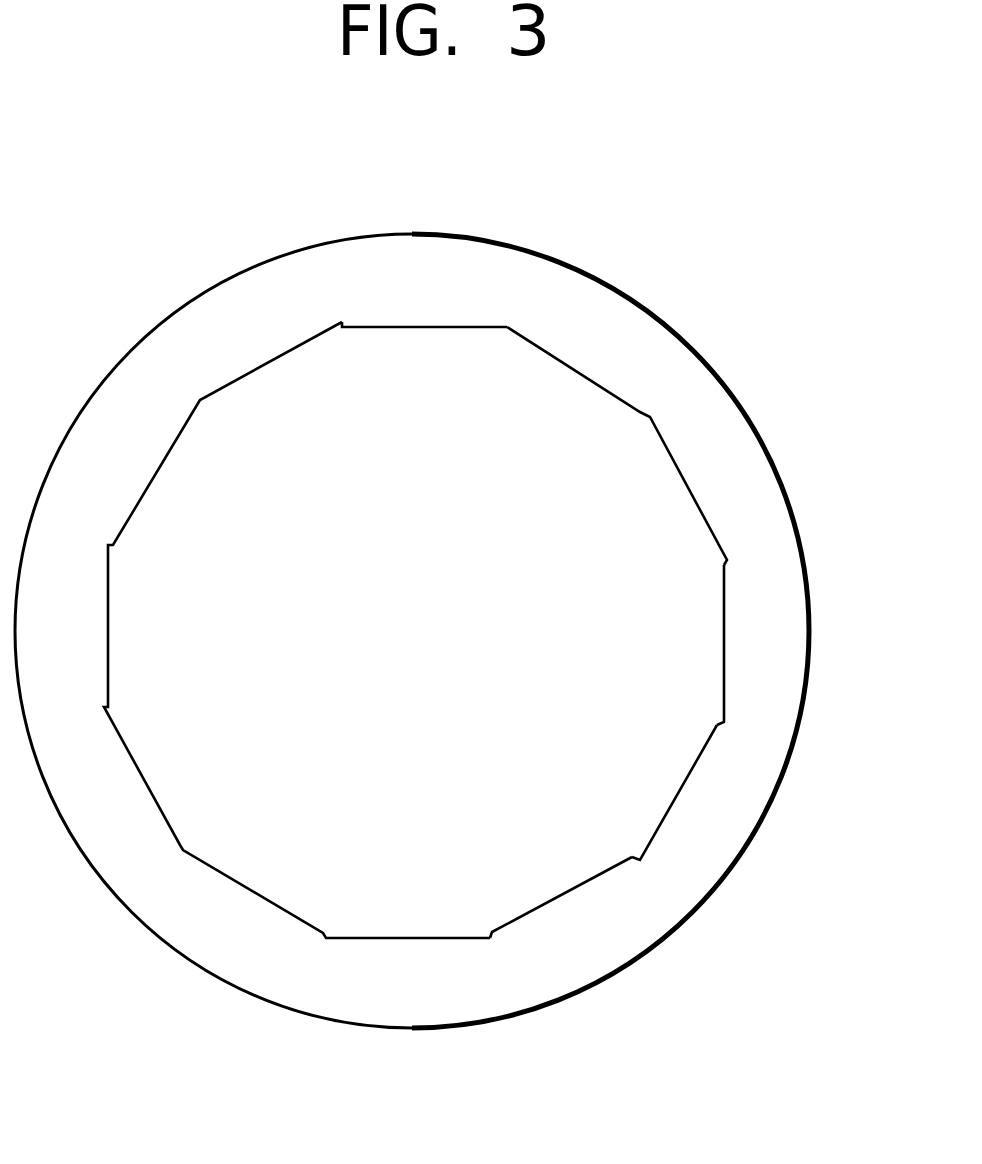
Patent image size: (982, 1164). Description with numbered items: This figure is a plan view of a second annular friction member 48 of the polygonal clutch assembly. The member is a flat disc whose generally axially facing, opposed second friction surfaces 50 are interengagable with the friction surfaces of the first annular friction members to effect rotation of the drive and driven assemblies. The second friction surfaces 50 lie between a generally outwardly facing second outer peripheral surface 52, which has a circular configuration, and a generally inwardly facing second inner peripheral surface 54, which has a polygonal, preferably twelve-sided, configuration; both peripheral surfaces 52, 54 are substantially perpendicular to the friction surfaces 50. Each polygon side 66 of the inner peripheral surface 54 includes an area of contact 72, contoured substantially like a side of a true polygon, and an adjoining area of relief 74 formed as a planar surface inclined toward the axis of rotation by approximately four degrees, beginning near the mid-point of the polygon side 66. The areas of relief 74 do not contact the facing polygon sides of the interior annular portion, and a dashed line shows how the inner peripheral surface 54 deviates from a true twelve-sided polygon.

The second annular friction member 48 is at (115, 252).
The second friction surface 50 is at (757, 485).
The second outer peripheral surface 52 is at (632, 296).
The second inner peripheral surface 54 is at (724, 604).
The polygon side 66 is at (693, 772).
The area of contact 72 is at (381, 327).
The area of relief 74 is at (497, 327).